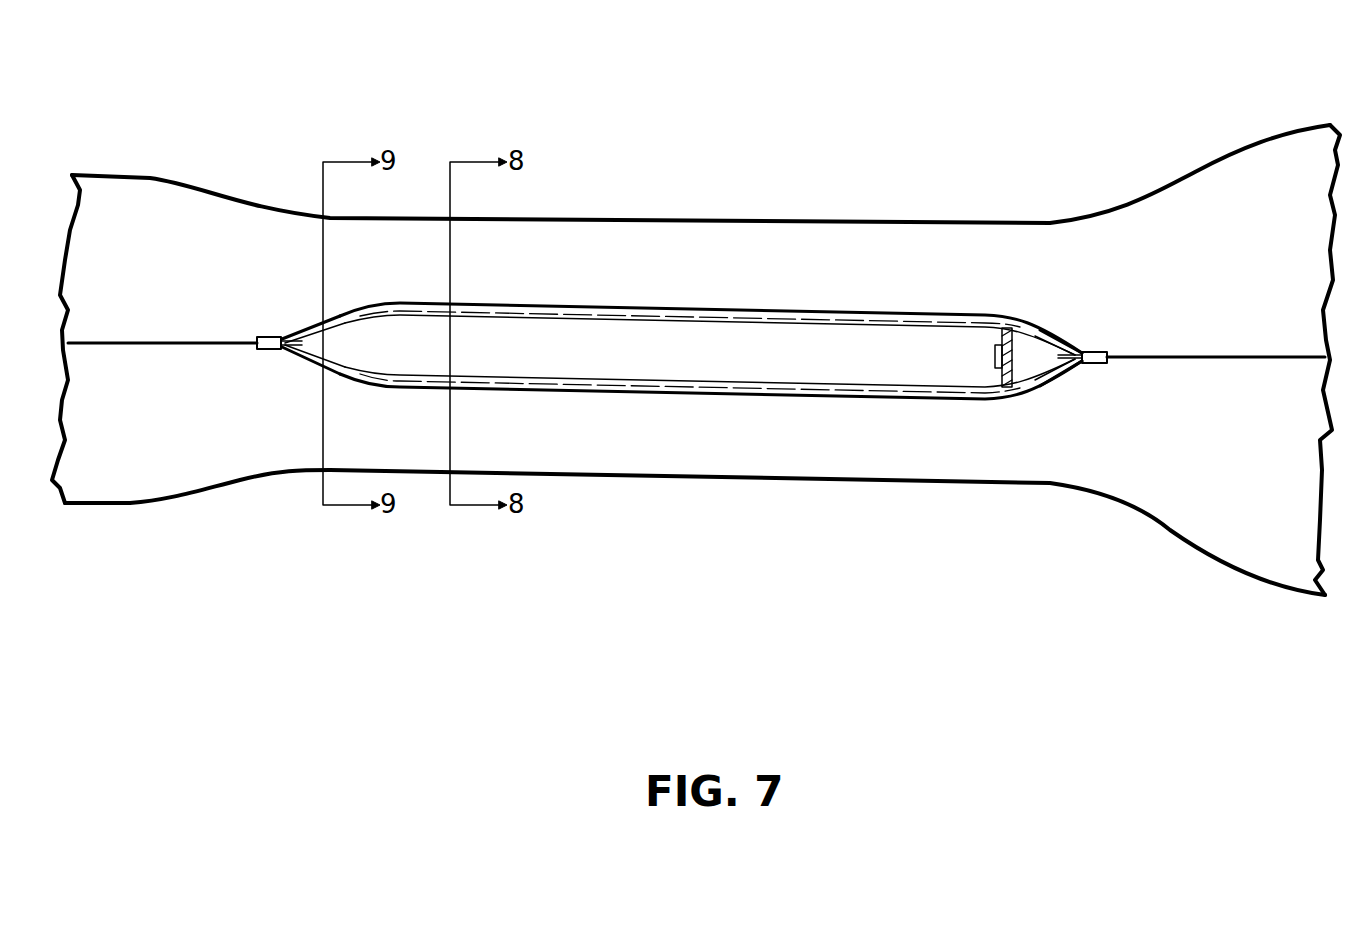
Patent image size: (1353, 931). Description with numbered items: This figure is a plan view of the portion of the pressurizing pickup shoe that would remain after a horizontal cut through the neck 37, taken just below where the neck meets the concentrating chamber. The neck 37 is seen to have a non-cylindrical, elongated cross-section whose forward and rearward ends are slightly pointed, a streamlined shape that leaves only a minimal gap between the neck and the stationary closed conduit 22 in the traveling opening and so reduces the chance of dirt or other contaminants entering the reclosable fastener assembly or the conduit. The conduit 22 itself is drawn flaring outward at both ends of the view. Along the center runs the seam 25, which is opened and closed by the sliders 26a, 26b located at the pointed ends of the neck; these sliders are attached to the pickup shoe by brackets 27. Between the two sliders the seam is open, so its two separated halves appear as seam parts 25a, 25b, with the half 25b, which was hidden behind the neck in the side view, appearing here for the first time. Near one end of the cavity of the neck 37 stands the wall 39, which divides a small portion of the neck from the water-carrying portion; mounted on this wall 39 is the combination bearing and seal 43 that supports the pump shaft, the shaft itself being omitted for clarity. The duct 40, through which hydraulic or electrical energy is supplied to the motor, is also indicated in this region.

The stationary closed conduit 22 is at (220, 206).
The seam 25 is at (137, 342).
The seam part 25a is at (548, 388).
The seam part 25b is at (540, 304).
The slider 26a is at (266, 337).
The slider 26b is at (1102, 352).
The bracket 27 is at (296, 333).
The neck 37 is at (696, 331).
The wall 39 is at (1008, 330).
The duct 40 is at (1034, 353).
The combination bearing and seal 43 is at (1012, 346).